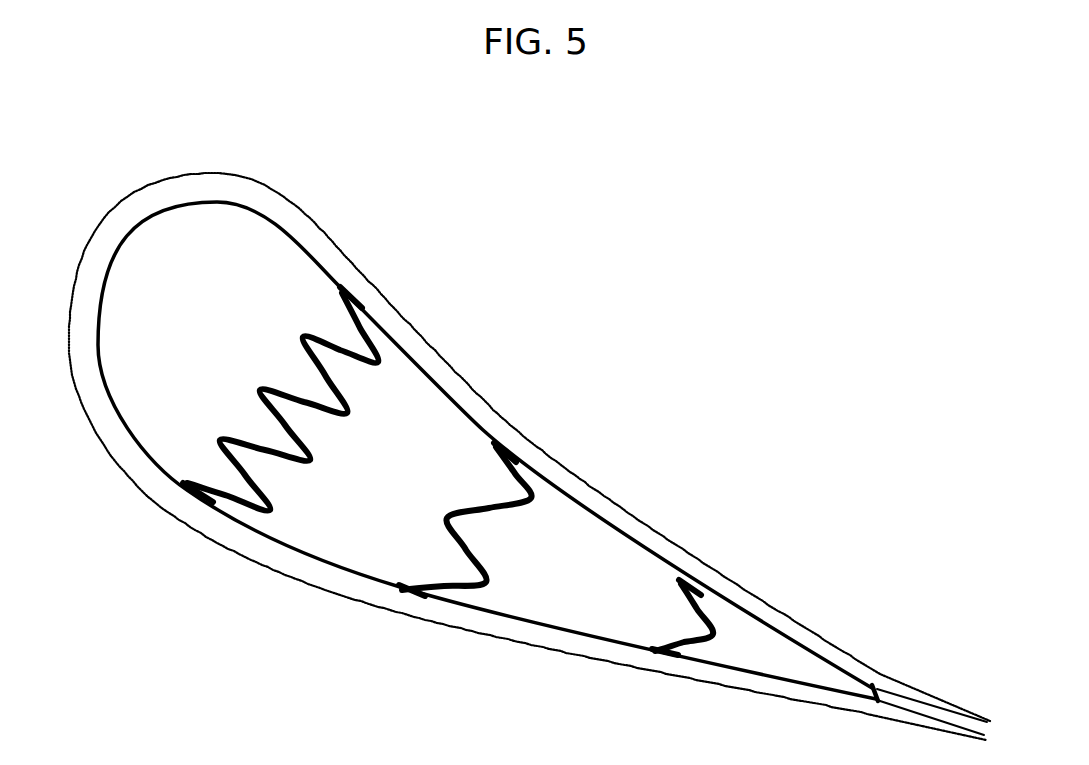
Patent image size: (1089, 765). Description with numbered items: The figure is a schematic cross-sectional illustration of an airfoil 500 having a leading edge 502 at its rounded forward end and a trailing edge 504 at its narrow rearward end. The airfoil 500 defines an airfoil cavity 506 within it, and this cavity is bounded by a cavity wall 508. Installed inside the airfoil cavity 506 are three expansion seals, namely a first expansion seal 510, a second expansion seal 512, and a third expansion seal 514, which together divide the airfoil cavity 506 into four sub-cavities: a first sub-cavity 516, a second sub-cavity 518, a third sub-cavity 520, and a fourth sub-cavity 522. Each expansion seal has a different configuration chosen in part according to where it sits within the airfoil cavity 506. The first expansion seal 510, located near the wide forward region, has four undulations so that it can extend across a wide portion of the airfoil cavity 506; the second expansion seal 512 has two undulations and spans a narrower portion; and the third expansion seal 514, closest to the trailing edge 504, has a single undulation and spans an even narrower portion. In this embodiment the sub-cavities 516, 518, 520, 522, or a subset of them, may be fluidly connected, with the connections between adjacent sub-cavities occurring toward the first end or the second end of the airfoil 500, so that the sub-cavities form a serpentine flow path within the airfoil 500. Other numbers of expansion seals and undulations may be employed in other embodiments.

The airfoil 500 is at (820, 489).
The leading edge 502 is at (114, 220).
The trailing edge 504 is at (986, 722).
The airfoil cavity 506 is at (411, 411).
The cavity wall 508 is at (263, 218).
The first expansion seal 510 is at (375, 345).
The second expansion seal 512 is at (527, 480).
The third expansion seal 514 is at (713, 620).
The first sub-cavity 516 is at (228, 343).
The second sub-cavity 518 is at (417, 485).
The third sub-cavity 520 is at (615, 593).
The fourth sub-cavity 522 is at (770, 665).